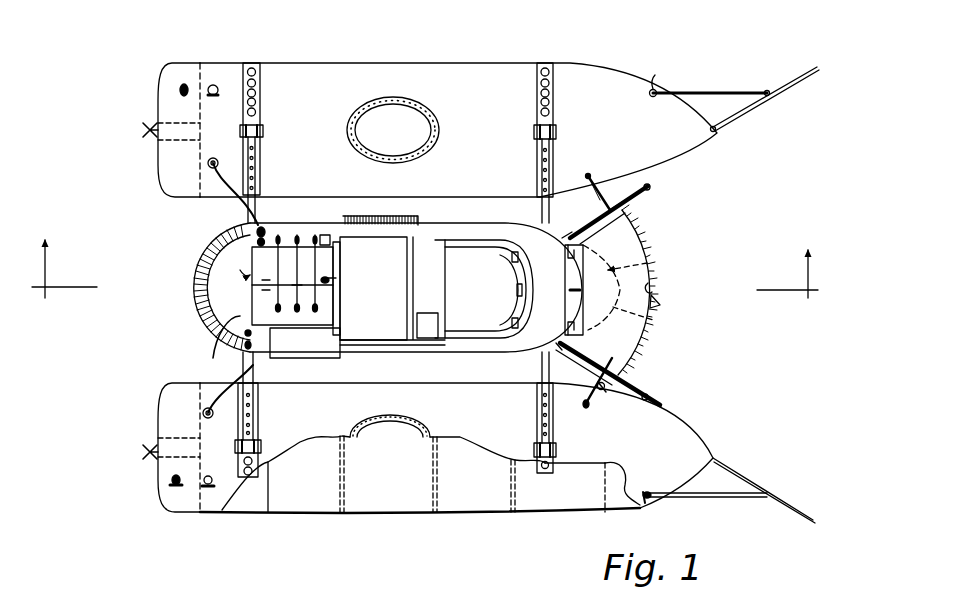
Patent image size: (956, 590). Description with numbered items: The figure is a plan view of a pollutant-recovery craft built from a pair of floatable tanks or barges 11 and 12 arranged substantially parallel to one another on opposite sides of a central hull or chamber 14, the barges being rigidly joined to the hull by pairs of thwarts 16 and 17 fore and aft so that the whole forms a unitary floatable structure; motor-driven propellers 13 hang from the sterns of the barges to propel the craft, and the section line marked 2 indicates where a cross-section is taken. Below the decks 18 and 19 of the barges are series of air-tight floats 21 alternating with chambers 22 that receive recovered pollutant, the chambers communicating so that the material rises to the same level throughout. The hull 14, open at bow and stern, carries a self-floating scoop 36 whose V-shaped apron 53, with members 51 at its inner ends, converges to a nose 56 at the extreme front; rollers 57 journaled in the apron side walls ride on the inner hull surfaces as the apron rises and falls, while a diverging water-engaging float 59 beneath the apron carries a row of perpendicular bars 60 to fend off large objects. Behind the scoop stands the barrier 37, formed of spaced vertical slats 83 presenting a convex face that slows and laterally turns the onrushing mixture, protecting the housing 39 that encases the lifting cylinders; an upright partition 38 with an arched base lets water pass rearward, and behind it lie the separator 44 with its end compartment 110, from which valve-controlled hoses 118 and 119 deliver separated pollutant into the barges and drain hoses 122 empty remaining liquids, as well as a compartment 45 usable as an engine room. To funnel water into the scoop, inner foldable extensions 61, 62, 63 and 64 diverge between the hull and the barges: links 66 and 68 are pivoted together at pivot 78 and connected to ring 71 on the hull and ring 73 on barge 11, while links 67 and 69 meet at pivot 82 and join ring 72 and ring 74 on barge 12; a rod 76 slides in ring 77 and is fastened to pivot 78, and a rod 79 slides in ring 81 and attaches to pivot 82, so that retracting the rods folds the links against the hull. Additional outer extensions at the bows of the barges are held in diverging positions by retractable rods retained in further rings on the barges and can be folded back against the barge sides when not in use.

The section line 2- 2 is at (425, 269).
The floatable tank or barge 11 is at (437, 110).
The floatable tank or barge 12 is at (337, 232).
The motor-driven propeller 13 is at (147, 130).
The central hull or chamber 14 is at (245, 222).
The thwart 16 is at (262, 72).
The thwart 17 is at (555, 75).
The deck 18 is at (437, 130).
The deck 19 is at (435, 448).
The float 21 is at (430, 490).
The chamber 22 is at (495, 463).
The self-floating scoop 36 is at (563, 296).
The barrier 37 is at (480, 297).
The upright wall or partition 38 is at (340, 242).
The housing 39 is at (392, 291).
The separator 44 is at (235, 267).
The compartment 45 is at (305, 343).
The member secured on apron 51 is at (580, 262).
The V-shaped apron 53 is at (662, 256).
The apex or nose 56 is at (655, 320).
The elongated roller 57 is at (580, 316).
The water-engaging float 59 is at (660, 286).
The bar 60 is at (663, 303).
The inner foldable extension 61 is at (600, 215).
The inner foldable extension 62 is at (612, 366).
The extension 63 is at (635, 200).
The extension 64 is at (642, 387).
The link 66 is at (596, 232).
The link 67 is at (600, 366).
The link 68 is at (632, 197).
The link 69 is at (655, 398).
The ring 71 is at (565, 234).
The ring 72 is at (565, 352).
The ring 73 is at (650, 187).
The ring 74 is at (645, 402).
The rod 76 is at (615, 197).
The ring 77 is at (592, 175).
The pivot 78 is at (620, 205).
The rod 79 is at (594, 380).
The ring 81 is at (587, 409).
The pivot 82 is at (604, 390).
The slat 83 is at (512, 320).
The end compartment 110 is at (260, 294).
The valve-controlled hose 118 is at (240, 200).
The valve-controlled hose 119 is at (245, 355).
The valve-controlled flexible hose 122 is at (232, 352).